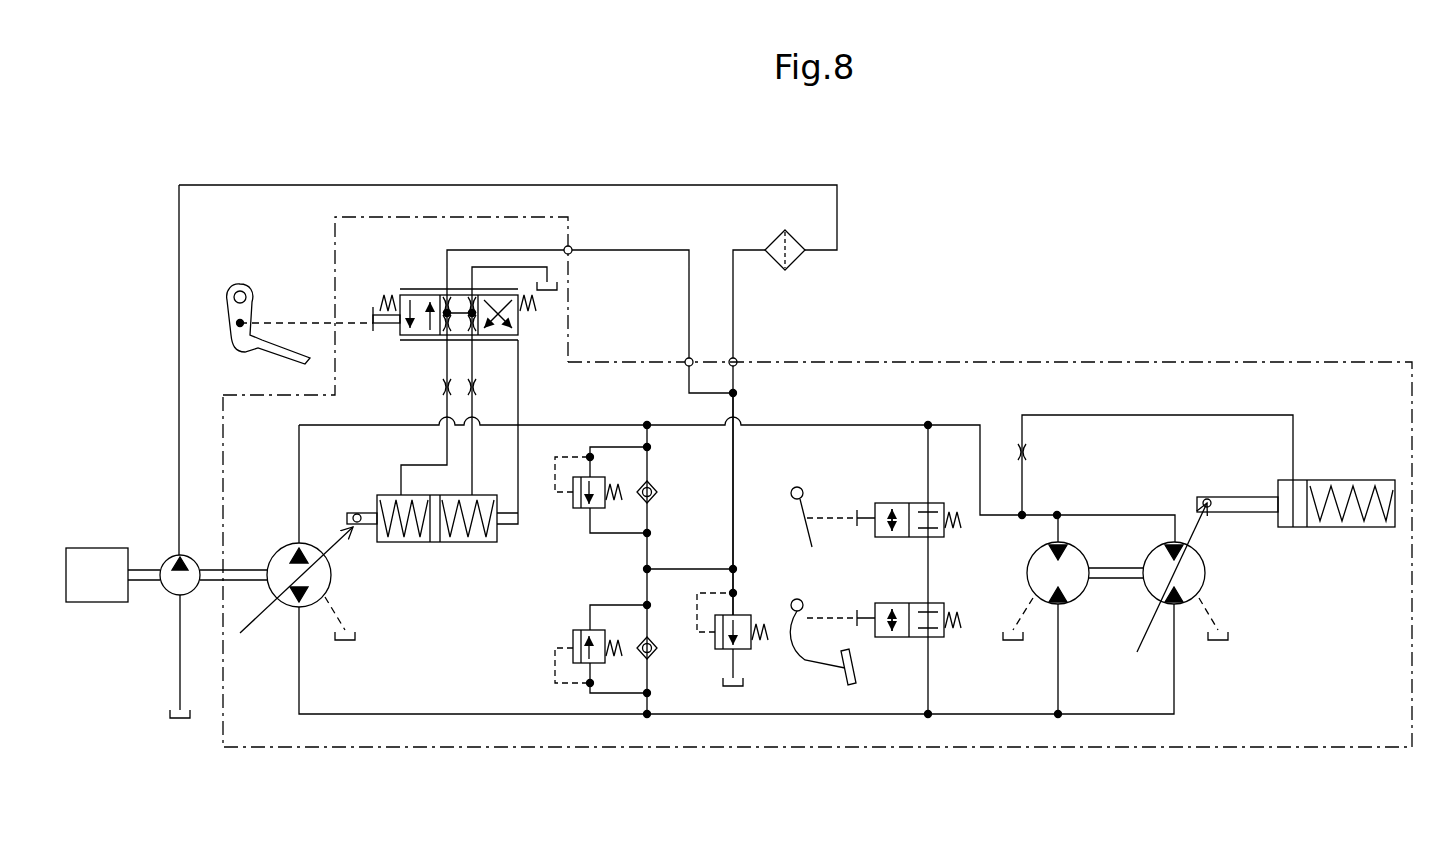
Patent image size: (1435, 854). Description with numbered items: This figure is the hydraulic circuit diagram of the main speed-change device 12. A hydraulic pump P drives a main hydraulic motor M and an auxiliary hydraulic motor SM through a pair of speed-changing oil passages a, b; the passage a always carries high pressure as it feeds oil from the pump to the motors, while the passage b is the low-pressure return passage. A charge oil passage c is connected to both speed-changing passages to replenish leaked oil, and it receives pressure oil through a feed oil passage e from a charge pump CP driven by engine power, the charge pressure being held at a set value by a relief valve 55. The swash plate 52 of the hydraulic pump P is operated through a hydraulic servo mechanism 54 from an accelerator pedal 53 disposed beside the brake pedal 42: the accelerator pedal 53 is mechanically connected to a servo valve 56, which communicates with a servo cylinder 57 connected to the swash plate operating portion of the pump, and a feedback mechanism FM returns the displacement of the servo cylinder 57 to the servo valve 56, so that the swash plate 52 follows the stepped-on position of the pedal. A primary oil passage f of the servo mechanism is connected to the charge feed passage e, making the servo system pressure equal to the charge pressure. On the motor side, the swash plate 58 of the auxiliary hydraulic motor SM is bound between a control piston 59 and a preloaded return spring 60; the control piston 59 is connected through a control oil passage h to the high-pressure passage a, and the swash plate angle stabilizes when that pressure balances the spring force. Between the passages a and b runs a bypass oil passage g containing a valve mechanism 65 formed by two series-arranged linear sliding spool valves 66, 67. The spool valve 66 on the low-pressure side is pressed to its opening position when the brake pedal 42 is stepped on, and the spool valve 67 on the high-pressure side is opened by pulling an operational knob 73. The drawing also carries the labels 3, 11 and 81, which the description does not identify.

The engine 3 is at (113, 575).
The charge pump CP is at (170, 555).
The hydraulic pump P is at (278, 548).
The swash plate 52 is at (255, 622).
The accelerator pedal 53 is at (258, 352).
The hydraulic servo mechanism 54 is at (357, 405).
The servo valve 56 is at (425, 287).
The servo cylinder 57 is at (406, 543).
The feedback mechanism FM is at (522, 397).
The primary oil passage f is at (650, 252).
The feed oil passage e is at (733, 312).
The hydraulic circuit unit 11 is at (1012, 362).
The main speed-change device 12 is at (1206, 466).
The speed-changing oil passage a is at (955, 425).
The speed-changing oil passage b is at (857, 715).
The charge oil passage c is at (647, 582).
The bypass oil passage g is at (928, 570).
The control oil passage h is at (1125, 415).
The hydraulic line 81 is at (733, 478).
The relief valve 55 is at (715, 645).
The valve mechanism 65 is at (913, 572).
The opening/closing spool valve 66 is at (900, 640).
The opening/closing spool valve 67 is at (900, 503).
The operational knob 73 is at (803, 490).
The brake pedal 42 is at (815, 655).
The swash plate 58 is at (1197, 530).
The control piston 59 is at (1238, 497).
The return spring 60 is at (1352, 480).
The main hydraulic motor M is at (1083, 598).
The auxiliary hydraulic motor SM is at (1207, 583).